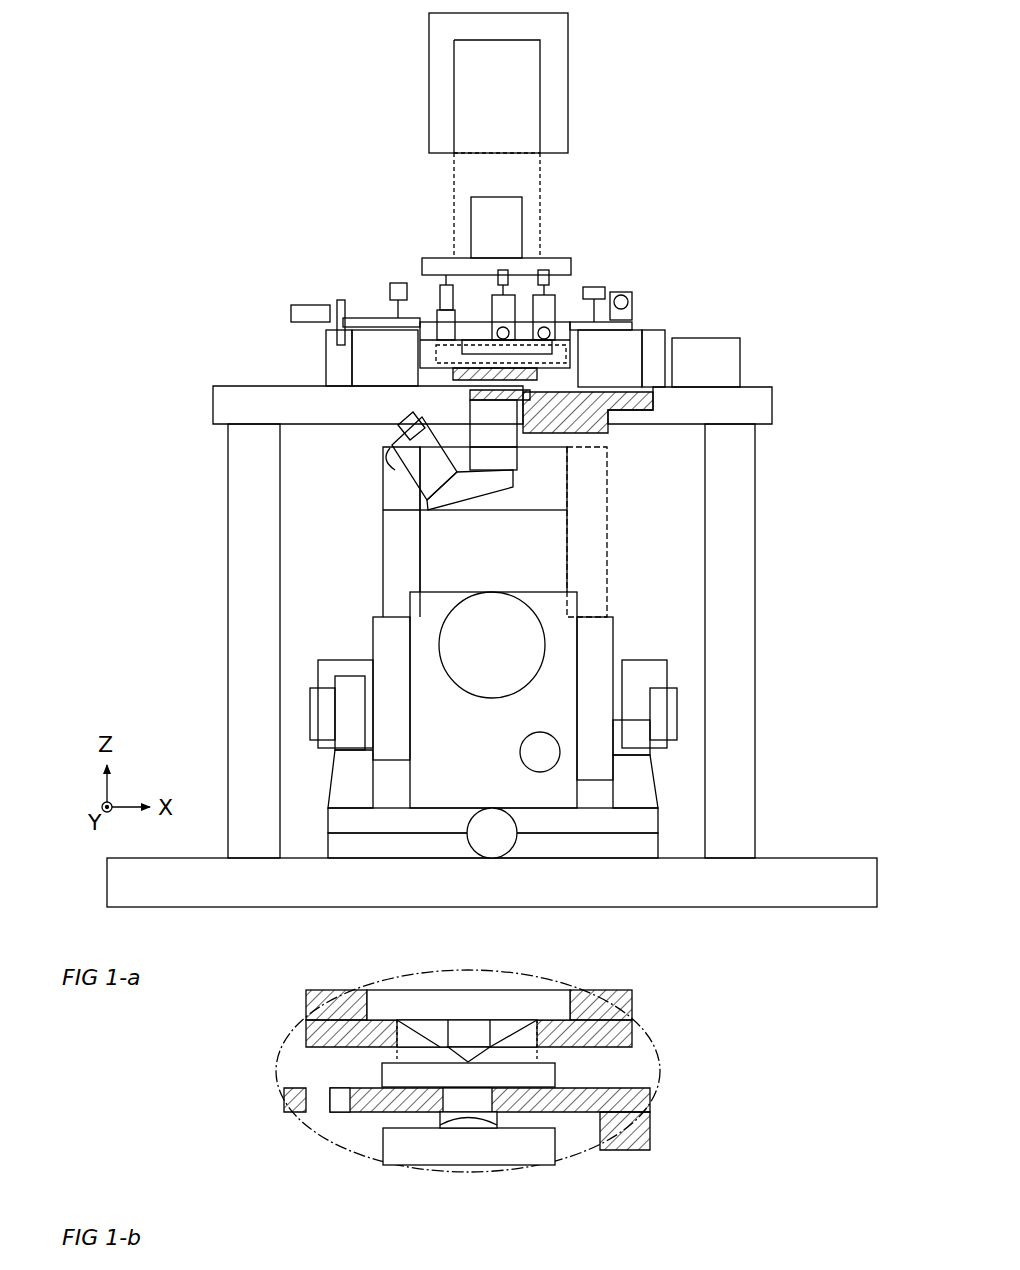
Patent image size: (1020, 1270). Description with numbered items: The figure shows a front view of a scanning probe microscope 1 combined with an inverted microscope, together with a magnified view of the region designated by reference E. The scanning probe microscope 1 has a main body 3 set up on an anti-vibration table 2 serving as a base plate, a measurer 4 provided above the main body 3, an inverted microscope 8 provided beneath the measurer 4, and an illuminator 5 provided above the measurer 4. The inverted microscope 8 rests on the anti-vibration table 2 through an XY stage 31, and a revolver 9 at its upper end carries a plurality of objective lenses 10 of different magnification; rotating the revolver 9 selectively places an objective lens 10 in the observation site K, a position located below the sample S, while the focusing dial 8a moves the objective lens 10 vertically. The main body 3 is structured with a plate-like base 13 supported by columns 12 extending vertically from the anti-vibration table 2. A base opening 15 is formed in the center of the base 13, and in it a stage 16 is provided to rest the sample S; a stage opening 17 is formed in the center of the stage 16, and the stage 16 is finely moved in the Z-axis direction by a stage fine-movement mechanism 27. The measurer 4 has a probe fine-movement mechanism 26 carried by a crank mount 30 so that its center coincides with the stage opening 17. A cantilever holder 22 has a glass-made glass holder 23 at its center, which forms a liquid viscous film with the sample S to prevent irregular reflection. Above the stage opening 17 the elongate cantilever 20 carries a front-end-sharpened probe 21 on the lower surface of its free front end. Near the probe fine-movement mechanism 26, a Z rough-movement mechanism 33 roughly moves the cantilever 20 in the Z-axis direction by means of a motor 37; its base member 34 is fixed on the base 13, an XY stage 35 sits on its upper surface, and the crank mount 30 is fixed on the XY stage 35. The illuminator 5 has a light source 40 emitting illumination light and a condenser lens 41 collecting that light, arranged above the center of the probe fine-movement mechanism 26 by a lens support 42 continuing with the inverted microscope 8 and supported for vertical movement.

In FIG. 1-a, the scanning probe microscope 1 is at (737, 60).
In FIG. 1-a, the anti-vibration table 2 is at (820, 860).
In FIG. 1-a, the main body 3 is at (782, 620).
In FIG. 1-a, the measurer 4 is at (785, 355).
In FIG. 1-a, the illuminator 5 is at (603, 108).
In FIG. 1-a, the inverted microscope 8 is at (636, 572).
In FIG. 1-a, the focusing dial 8a is at (668, 692).
In FIG. 1-a, the revolver 9 is at (420, 515).
In FIG. 1-a, the objective lenses 10 is at (395, 428).
In FIG. 1-a, the columns 12 is at (240, 686).
In FIG. 1-a, the base 13 is at (770, 403).
In FIG. 1-b, the base 13 is at (320, 1100).
In FIG. 1-a, the base opening 15 is at (465, 385).
In FIG. 1-b, the base opening 15 is at (345, 1105).
In FIG. 1-a, the stage 16 is at (470, 410).
In FIG. 1-b, the stage 16 is at (610, 1080).
In FIG. 1-b, the stage opening 17 is at (490, 1110).
In FIG. 1-b, the cantilever 20 is at (500, 1055).
In FIG. 1-b, the probe 21 is at (432, 1050).
In FIG. 1-b, the cantilever holder 22 is at (620, 1035).
In FIG. 1-b, the glass holder 23 is at (470, 1060).
In FIG. 1-a, the probe fine-movement mechanism 26 is at (568, 287).
In FIG. 1-a, the stage fine-movement mechanism 27 is at (620, 436).
In FIG. 1-a, the crank mount 30 is at (392, 290).
In FIG. 1-a, the XY stage 31 is at (583, 847).
In FIG. 1-a, the Z rough-movement mechanism 33 is at (360, 362).
In FIG. 1-a, the base member 34 is at (337, 350).
In FIG. 1-a, the XY stage 35 is at (385, 322).
In FIG. 1-a, the motor 37 is at (718, 352).
In FIG. 1-a, the light source 40 is at (437, 90).
In FIG. 1-a, the condenser lens 41 is at (465, 290).
In FIG. 1-a, the lens support 42 is at (530, 178).
In FIG. 1-a, the observation site K is at (510, 472).
In FIG. 1-a, the sample S is at (560, 375).
In FIG. 1-b, the sample S is at (390, 1080).
In FIG. 1-a, the region E is at (599, 348).